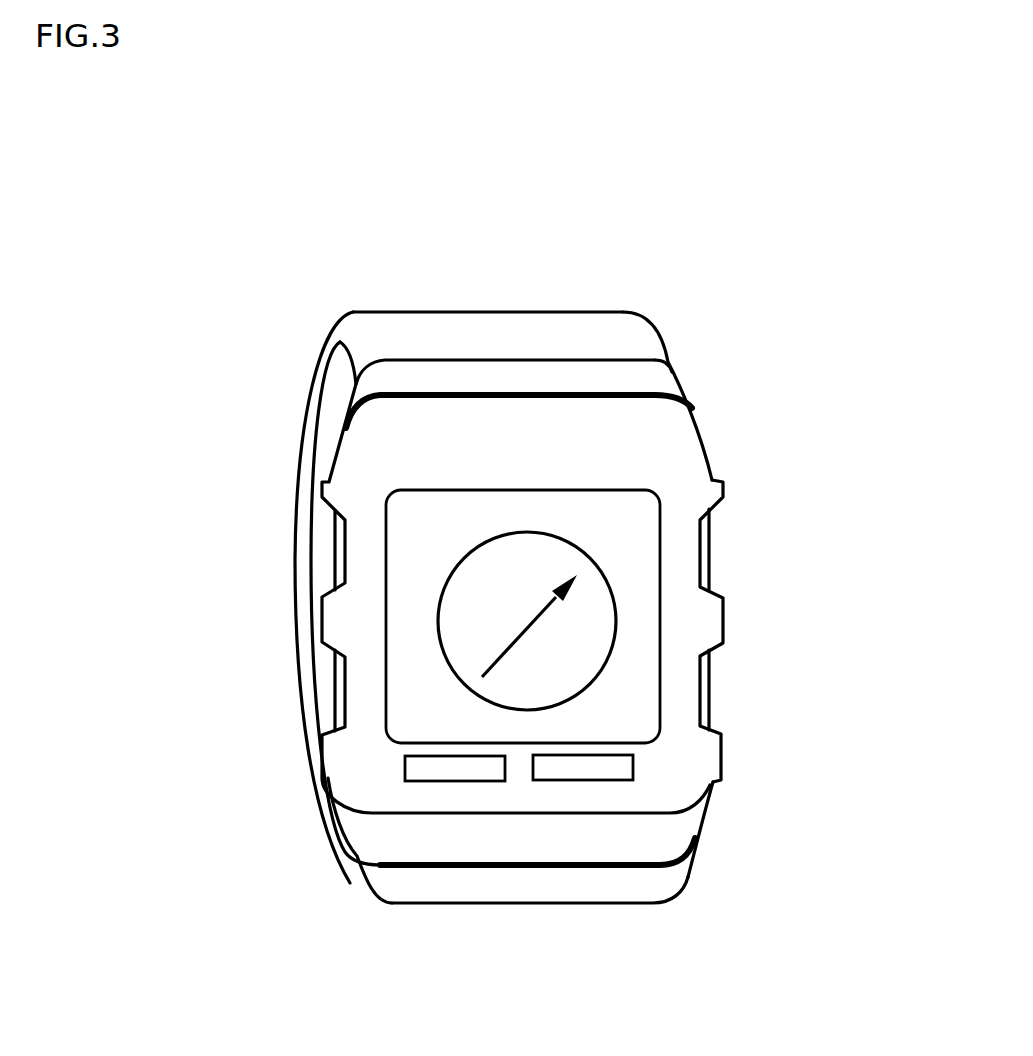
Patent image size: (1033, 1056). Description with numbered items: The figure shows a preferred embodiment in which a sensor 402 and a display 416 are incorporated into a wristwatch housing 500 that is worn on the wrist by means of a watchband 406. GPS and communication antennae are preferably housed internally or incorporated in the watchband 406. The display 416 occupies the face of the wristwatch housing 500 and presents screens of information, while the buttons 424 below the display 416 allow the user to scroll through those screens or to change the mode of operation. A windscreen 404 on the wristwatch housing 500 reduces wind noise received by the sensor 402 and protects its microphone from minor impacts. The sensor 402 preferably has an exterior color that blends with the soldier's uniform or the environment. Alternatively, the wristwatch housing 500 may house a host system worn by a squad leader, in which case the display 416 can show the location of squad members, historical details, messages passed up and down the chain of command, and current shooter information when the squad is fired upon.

The sensor 402 is at (208, 388).
The windscreen 404 is at (630, 378).
The watchband 406 is at (608, 336).
The display 416 is at (643, 608).
The buttons 424 is at (397, 773).
The wristwatch housing 500 is at (722, 694).